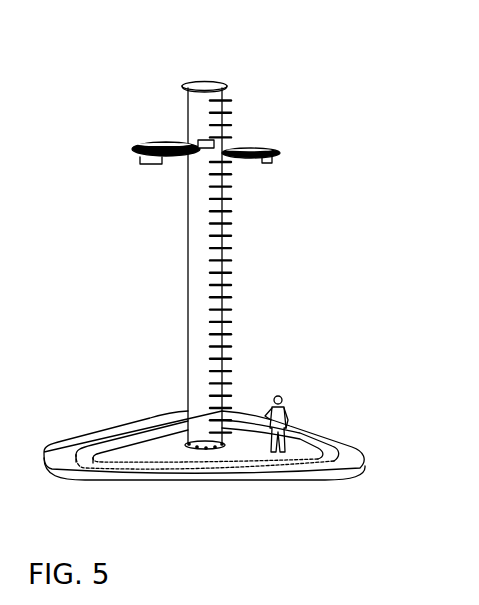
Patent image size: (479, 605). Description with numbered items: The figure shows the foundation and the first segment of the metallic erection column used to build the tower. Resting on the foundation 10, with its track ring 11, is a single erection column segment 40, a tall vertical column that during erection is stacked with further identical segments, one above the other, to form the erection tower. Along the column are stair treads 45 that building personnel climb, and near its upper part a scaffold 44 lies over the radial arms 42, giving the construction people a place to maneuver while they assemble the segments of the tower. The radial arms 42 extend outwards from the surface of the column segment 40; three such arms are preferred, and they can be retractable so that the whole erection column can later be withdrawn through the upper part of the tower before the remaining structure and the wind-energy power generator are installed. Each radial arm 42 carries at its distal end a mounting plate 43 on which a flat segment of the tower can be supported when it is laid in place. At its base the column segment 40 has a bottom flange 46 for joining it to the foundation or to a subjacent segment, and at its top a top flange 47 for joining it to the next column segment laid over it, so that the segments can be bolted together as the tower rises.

The base 10 is at (330, 441).
The track ring 11 is at (135, 430).
The erection column segment 40 is at (200, 281).
The radial arm 42 is at (244, 158).
The mounting plate 43 is at (268, 159).
The scaffold 44 is at (155, 142).
The stair tread 45 is at (229, 313).
The bottom flange 46 is at (188, 444).
The top flange 47 is at (209, 82).